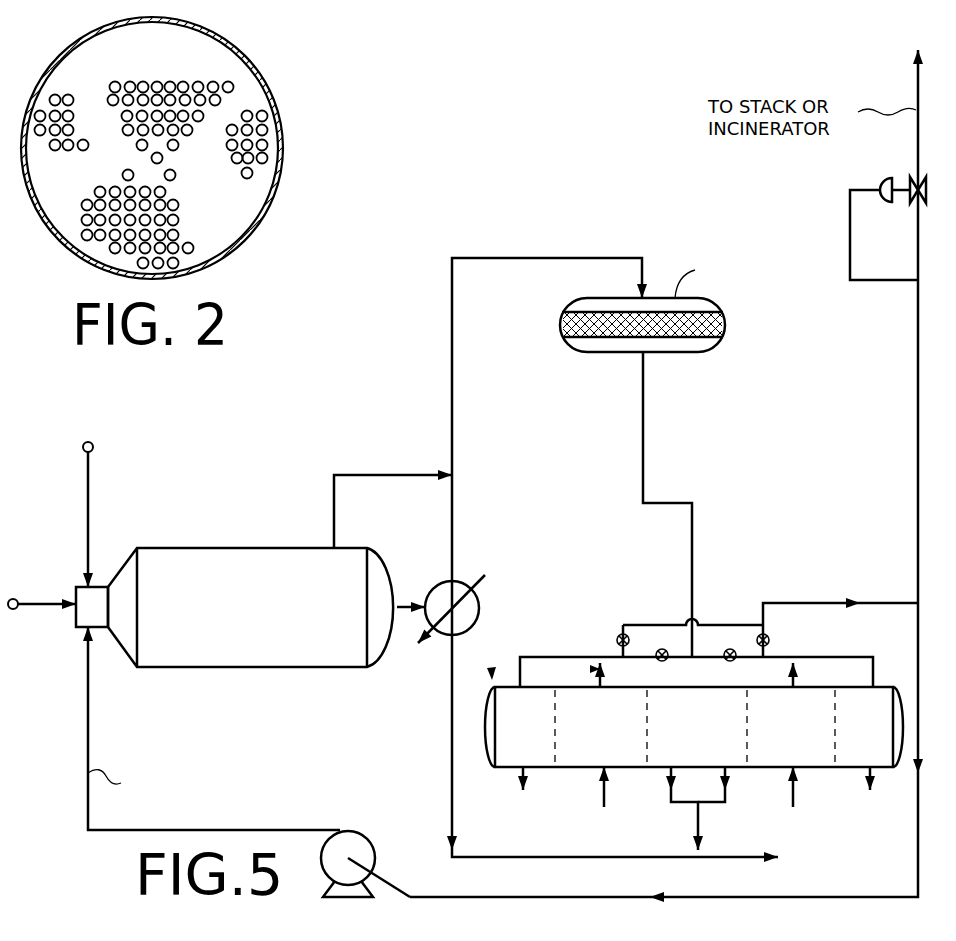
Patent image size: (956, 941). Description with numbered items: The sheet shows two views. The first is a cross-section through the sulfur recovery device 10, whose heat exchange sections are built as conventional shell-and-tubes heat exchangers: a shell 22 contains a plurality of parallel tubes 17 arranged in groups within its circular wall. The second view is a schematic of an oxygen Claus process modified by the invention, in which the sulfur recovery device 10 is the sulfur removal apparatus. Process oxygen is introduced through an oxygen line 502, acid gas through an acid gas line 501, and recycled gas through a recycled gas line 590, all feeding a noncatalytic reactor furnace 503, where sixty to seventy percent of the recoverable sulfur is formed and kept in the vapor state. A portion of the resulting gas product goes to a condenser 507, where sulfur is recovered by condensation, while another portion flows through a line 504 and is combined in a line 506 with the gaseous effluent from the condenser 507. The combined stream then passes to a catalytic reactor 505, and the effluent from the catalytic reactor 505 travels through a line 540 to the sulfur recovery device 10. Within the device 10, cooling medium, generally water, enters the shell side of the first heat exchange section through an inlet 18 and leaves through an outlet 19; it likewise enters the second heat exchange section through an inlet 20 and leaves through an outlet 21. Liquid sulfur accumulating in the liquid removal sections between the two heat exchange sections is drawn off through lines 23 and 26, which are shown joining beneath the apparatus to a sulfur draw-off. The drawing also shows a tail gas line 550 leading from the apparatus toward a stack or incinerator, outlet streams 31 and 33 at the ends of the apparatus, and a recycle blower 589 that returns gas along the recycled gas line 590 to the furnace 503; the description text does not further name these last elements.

In FIG. 2, the shell 22 is at (262, 68).
In FIG. 2, the parallel tubes 17 is at (264, 131).
In FIG. 5, the acid gas line 501 is at (44, 612).
In FIG. 5, the oxygen line 502 is at (88, 484).
In FIG. 5, the noncatalytic reactor furnace 503 is at (205, 548).
In FIG. 5, the line 504 is at (352, 475).
In FIG. 5, the catalytic reactor 505 is at (727, 322).
In FIG. 5, the line 506 is at (452, 408).
In FIG. 5, the condenser 507 is at (475, 597).
In FIG. 5, the line 540 is at (645, 465).
In FIG. 5, the tail gas line 550 is at (895, 603).
In FIG. 5, the sulfur recovery device 10 is at (492, 678).
In FIG. 5, the outlet 19 is at (596, 669).
In FIG. 5, the outlet 21 is at (797, 669).
In FIG. 5, the outlet stream 31 is at (521, 789).
In FIG. 5, the inlet 18 is at (602, 790).
In FIG. 5, the line 23 is at (670, 782).
In FIG. 5, the line 26 is at (728, 782).
In FIG. 5, the inlet 20 is at (795, 795).
In FIG. 5, the outlet stream 33 is at (873, 790).
In FIG. 5, the recycle gas blower 589 is at (358, 840).
In FIG. 5, the recycled gas line 590 is at (88, 735).